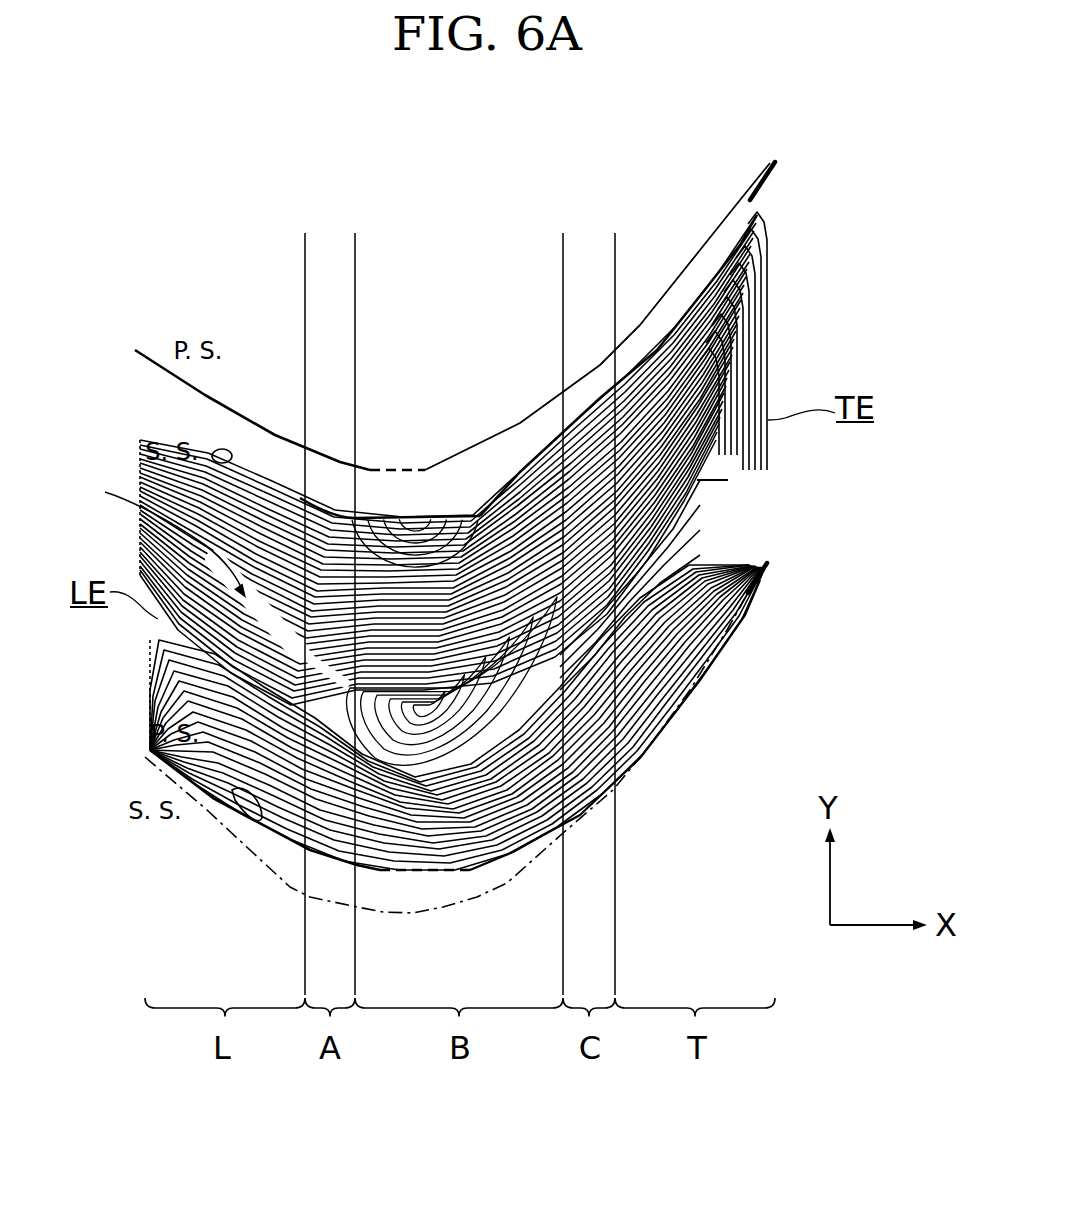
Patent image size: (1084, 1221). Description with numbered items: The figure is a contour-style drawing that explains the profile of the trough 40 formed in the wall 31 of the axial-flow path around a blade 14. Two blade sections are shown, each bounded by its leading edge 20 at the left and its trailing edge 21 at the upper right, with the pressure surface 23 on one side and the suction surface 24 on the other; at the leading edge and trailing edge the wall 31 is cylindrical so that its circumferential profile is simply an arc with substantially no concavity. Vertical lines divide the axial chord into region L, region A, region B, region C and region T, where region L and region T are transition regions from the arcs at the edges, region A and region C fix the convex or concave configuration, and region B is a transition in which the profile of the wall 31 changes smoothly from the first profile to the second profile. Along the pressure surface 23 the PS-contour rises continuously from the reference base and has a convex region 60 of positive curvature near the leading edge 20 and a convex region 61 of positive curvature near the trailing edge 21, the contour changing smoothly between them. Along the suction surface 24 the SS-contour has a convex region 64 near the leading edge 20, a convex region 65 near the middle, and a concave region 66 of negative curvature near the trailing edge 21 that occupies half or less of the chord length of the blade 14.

The blade 14 is at (697, 278).
The leading edge 20 is at (138, 353).
The trailing edge 21 is at (770, 162).
The pressure surface 23 is at (278, 437).
The suction surface 24 is at (215, 452).
The wall 31 is at (712, 466).
The trough 40 is at (159, 526).
The convex region 60 is at (327, 855).
The convex region 61 is at (587, 775).
The convex region 64 is at (322, 508).
The convex region 65 is at (423, 522).
The concave region 66 is at (583, 444).